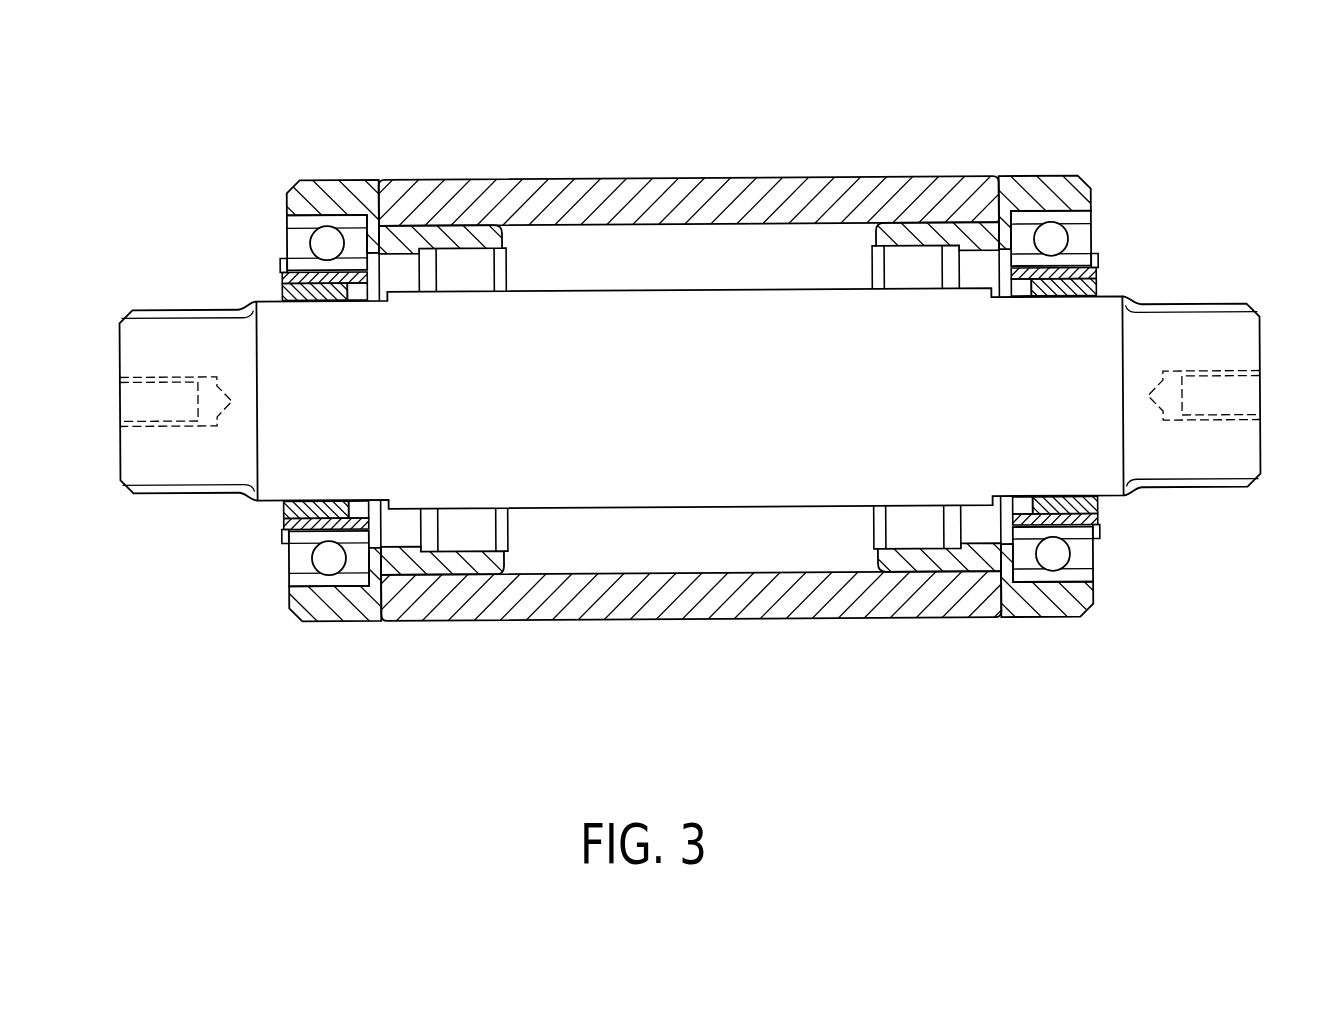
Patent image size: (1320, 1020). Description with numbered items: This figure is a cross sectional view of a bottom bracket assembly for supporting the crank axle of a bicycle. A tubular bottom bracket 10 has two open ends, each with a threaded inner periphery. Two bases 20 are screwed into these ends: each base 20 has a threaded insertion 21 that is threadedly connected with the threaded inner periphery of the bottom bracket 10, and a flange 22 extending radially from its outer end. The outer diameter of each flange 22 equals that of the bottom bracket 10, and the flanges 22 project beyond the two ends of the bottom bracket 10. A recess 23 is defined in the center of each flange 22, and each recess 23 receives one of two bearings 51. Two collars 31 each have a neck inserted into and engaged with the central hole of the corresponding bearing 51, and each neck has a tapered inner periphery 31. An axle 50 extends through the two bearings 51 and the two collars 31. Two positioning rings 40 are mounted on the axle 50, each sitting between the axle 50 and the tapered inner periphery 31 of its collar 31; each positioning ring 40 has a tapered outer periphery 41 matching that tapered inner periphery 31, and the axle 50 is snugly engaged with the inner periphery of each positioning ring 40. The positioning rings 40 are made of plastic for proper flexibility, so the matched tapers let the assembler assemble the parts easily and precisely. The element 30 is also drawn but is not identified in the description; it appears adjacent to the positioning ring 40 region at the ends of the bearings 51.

The bottom bracket 10 is at (660, 400).
The base 20 is at (660, 400).
The threaded insertion 21 is at (468, 182).
The flange 22 is at (357, 181).
The recess 23 is at (328, 200).
The dust seal 30 is at (282, 262).
The collar 31 is at (335, 520).
The positioning ring 40 is at (279, 285).
The tapered outer periphery 41 is at (282, 508).
The axle 50 is at (750, 286).
The bearing 51 is at (322, 226).